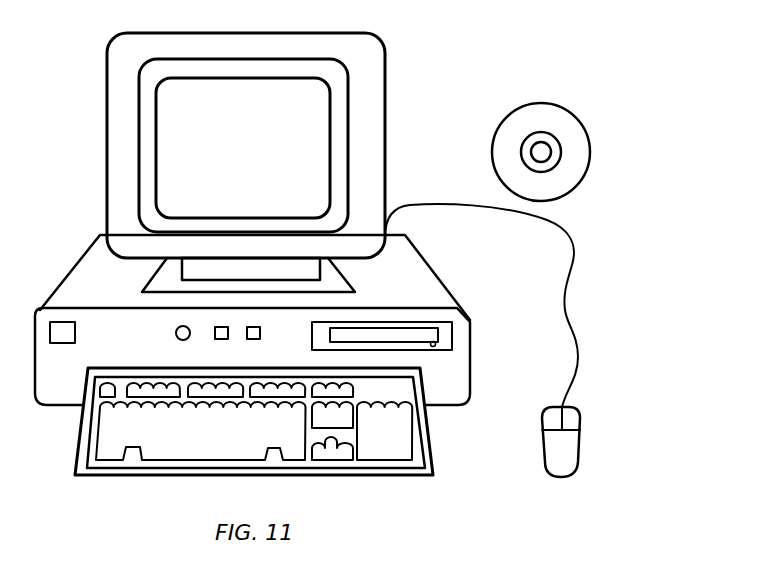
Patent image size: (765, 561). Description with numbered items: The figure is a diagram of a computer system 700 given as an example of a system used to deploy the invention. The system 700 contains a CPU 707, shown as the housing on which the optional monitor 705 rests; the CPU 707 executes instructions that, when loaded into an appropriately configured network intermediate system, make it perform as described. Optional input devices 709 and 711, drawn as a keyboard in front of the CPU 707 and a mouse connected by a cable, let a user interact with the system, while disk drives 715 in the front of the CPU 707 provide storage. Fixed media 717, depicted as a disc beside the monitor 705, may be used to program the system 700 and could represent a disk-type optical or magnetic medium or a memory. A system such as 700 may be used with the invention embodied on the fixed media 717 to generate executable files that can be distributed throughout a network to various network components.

The system 700 is at (503, 52).
The monitor 705 is at (307, 122).
The CPU 707 is at (423, 280).
The input device 709 is at (153, 477).
The input device 711 is at (565, 457).
The disk drive 715 is at (452, 337).
The fixed media 717 is at (562, 108).